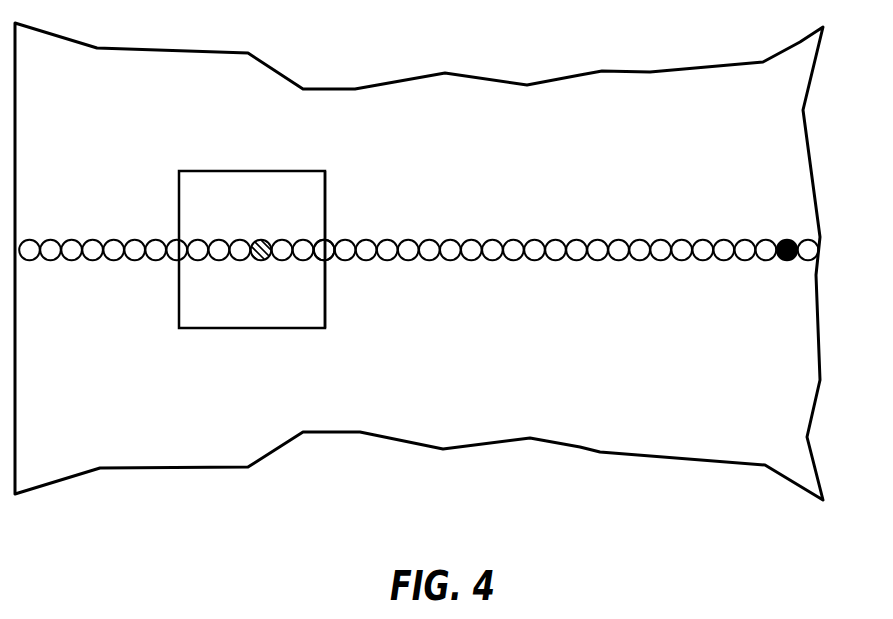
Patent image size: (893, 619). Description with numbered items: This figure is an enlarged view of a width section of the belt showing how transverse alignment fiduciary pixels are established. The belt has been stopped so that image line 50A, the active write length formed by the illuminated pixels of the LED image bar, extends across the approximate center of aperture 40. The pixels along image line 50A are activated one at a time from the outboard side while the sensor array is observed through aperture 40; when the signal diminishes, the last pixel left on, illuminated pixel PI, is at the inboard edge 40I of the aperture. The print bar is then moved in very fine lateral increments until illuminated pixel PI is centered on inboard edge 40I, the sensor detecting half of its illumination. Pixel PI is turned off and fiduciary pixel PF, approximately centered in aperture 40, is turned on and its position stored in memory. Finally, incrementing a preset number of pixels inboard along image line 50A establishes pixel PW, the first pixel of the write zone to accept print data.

The aperture 40 is at (300, 171).
The inboard edge of aperture 40I is at (325, 307).
The image line 50A is at (493, 242).
The fiduciary pixel PF is at (259, 241).
The illuminated pixel PI is at (330, 243).
The write zone pixel PW is at (780, 242).